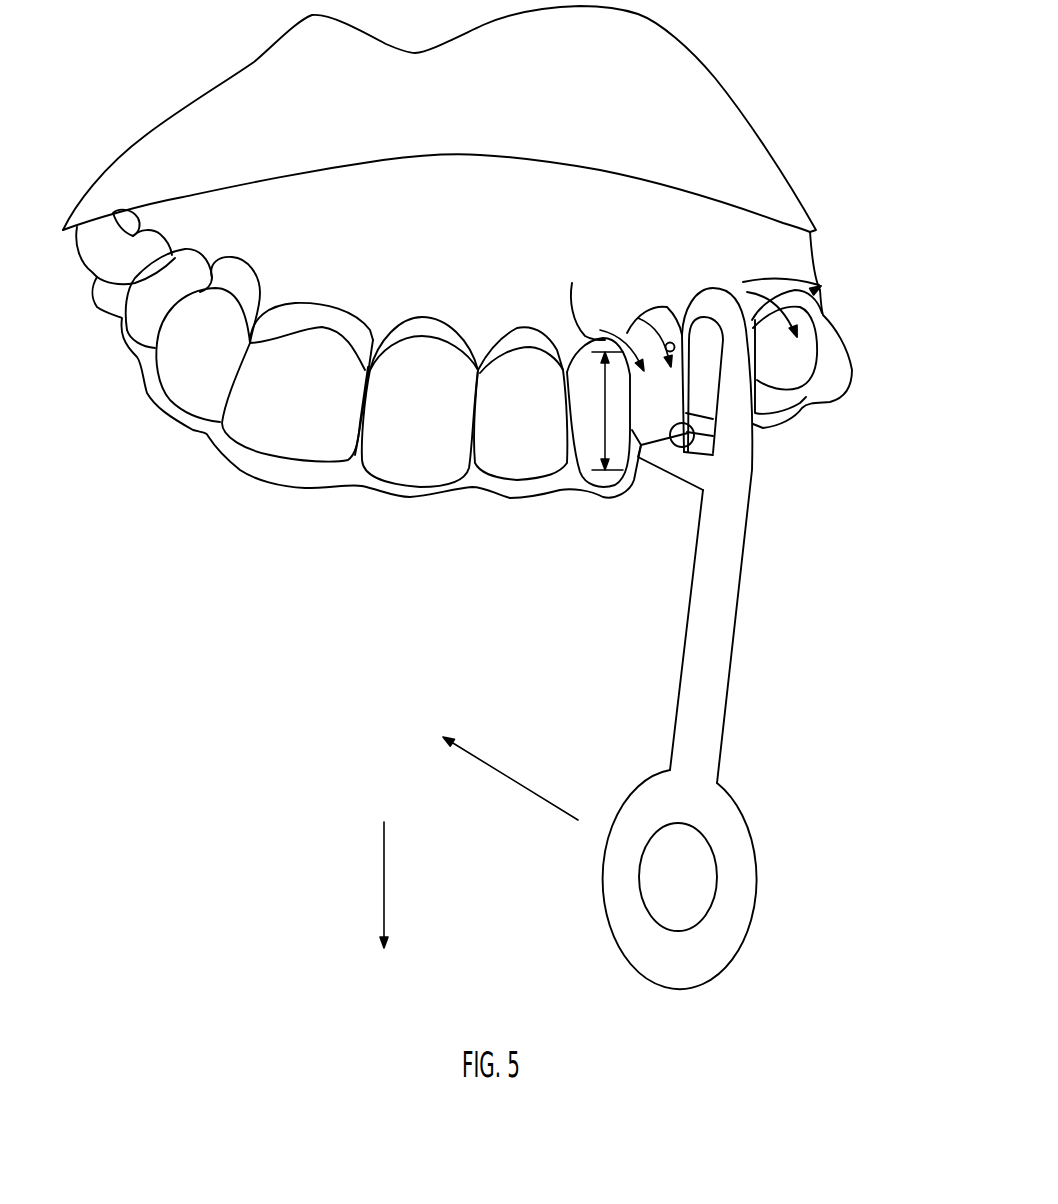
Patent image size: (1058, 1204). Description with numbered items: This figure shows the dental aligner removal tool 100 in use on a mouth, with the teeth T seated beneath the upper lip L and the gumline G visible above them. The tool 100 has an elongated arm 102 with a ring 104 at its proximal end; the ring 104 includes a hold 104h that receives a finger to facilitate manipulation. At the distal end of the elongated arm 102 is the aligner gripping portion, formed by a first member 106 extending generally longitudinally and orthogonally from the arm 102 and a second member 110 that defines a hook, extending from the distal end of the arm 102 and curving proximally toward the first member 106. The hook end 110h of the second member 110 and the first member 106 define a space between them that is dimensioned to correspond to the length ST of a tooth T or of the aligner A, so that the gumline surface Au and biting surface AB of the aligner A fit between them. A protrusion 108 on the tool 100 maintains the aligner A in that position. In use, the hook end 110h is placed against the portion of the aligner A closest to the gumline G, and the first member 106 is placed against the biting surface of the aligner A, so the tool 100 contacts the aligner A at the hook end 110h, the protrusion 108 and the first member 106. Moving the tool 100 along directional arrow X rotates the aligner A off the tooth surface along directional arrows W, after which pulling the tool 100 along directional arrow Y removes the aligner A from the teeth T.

The upper lip L is at (683, 70).
The tooth T is at (230, 277).
The aligner A is at (267, 438).
The biting surface of the aligner AB is at (603, 497).
The gumline surface of the aligner Au is at (572, 283).
The gumline G is at (703, 250).
The directional arrows W is at (636, 335).
The length of the tooth ST is at (605, 411).
The dental aligner removal tool 100 is at (755, 652).
The elongated arm 102 is at (723, 598).
The ring 104 is at (737, 865).
The hold 104h is at (695, 897).
The first member 106 is at (660, 457).
The protrusion 108 is at (680, 447).
The second member 110 is at (740, 433).
The hook end 110h is at (682, 345).
The directional arrow X is at (510, 778).
The directional arrow Y is at (376, 885).